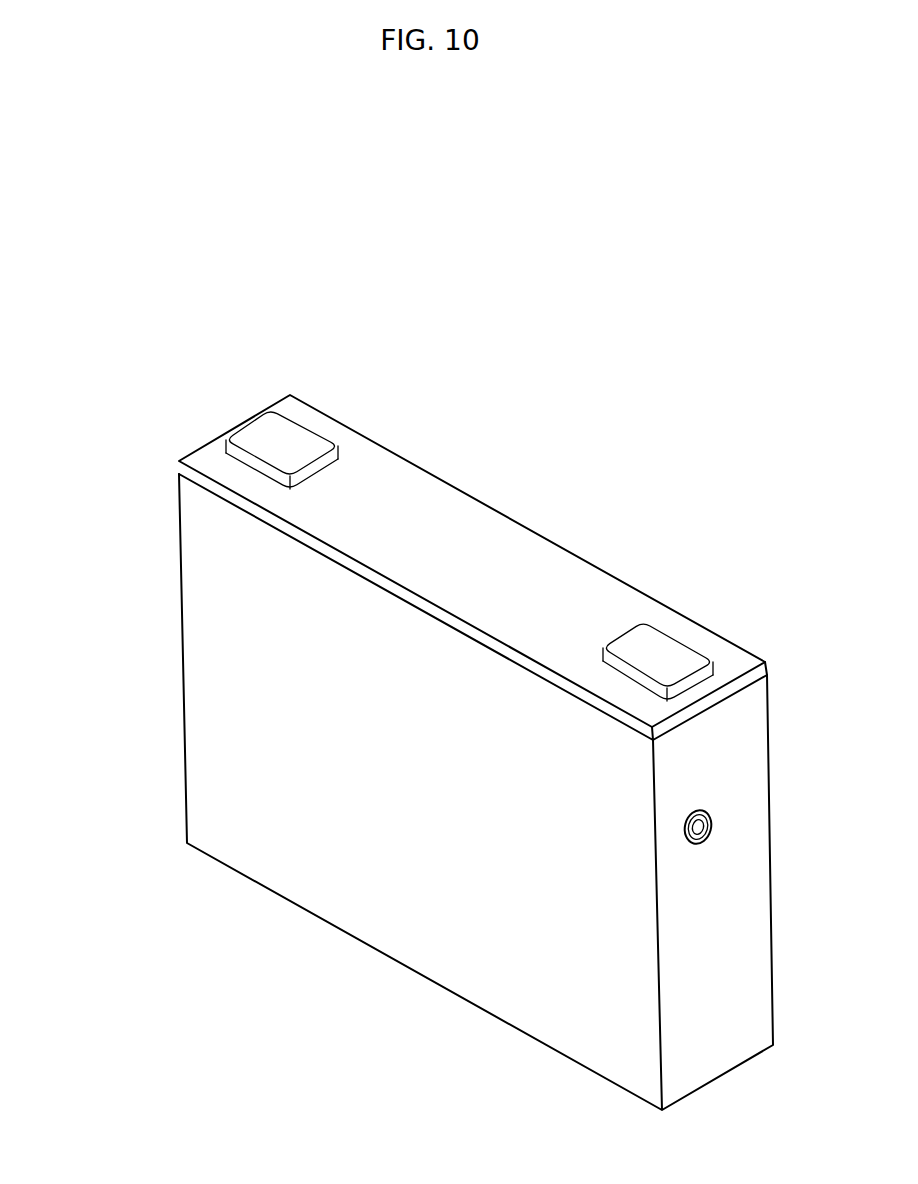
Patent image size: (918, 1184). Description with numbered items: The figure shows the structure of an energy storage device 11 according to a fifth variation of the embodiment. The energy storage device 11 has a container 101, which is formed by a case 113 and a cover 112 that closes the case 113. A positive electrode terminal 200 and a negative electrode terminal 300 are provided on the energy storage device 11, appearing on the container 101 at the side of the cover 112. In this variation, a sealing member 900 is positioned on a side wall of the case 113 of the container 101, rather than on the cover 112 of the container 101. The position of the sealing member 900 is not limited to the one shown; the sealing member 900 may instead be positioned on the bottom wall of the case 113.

The energy storage device 11 is at (593, 408).
The container 101 is at (108, 593).
The cover 112 is at (320, 523).
The case 113 is at (228, 672).
The positive electrode terminal 200 is at (284, 438).
The negative electrode terminal 300 is at (657, 648).
The sealing member 900 is at (713, 818).